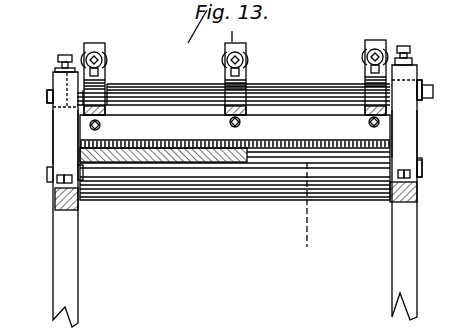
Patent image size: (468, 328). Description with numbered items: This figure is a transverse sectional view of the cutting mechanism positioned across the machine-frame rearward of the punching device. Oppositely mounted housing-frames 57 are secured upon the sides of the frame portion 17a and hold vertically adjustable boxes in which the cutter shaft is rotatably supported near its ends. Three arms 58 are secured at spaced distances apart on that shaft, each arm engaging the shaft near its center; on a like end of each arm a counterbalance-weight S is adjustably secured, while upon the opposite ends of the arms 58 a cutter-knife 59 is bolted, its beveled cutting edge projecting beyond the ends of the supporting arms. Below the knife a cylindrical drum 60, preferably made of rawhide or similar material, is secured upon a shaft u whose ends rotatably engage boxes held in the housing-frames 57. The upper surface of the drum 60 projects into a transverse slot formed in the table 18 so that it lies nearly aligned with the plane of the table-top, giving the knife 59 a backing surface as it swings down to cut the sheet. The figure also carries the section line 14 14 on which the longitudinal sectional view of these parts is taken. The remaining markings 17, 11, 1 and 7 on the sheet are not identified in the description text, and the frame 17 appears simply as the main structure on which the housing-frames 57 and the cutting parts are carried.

The counterbalance-weight S is at (106, 58).
The arms 58 is at (106, 80).
The cutter-knife 59 is at (306, 124).
The housing-frames 57 is at (57, 133).
The frame portion 17a is at (70, 267).
The frame 17 is at (235, 157).
The blade holder 11 is at (170, 163).
The table 18 is at (215, 163).
The cylindrical drum 60 is at (283, 190).
The section line 14 14 is at (278, 137).
The shaft u is at (422, 170).
The bolt 1 is at (29, 81).
The bolt 7 is at (446, 60).